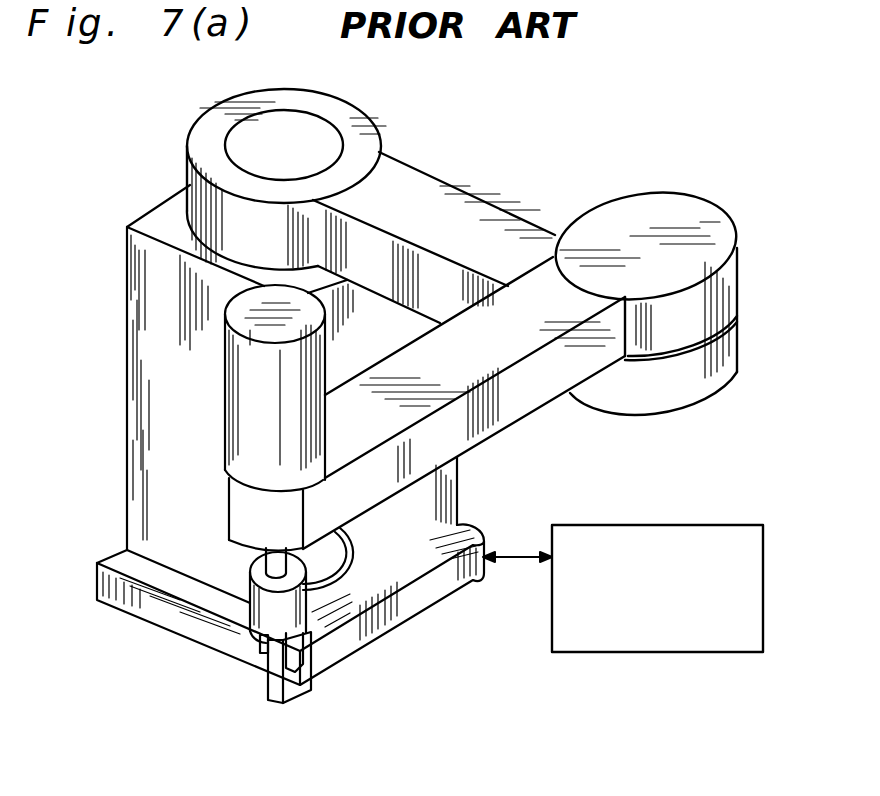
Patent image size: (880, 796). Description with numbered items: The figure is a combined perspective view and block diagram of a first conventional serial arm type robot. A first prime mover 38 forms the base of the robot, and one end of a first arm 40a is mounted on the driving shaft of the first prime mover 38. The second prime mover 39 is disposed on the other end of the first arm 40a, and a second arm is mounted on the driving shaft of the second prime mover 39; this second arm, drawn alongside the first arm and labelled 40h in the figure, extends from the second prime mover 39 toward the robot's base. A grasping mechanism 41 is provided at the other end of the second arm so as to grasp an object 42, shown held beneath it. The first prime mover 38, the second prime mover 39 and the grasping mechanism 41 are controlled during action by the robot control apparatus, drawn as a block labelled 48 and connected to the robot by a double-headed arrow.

The first prime mover 38 is at (167, 424).
The first arm 40a is at (425, 207).
The second arm 40h is at (447, 427).
The second prime mover 39 is at (670, 385).
The grasping mechanism 41 is at (267, 608).
The object to be grasped 42 is at (293, 678).
The robot control apparatus 48 is at (650, 642).